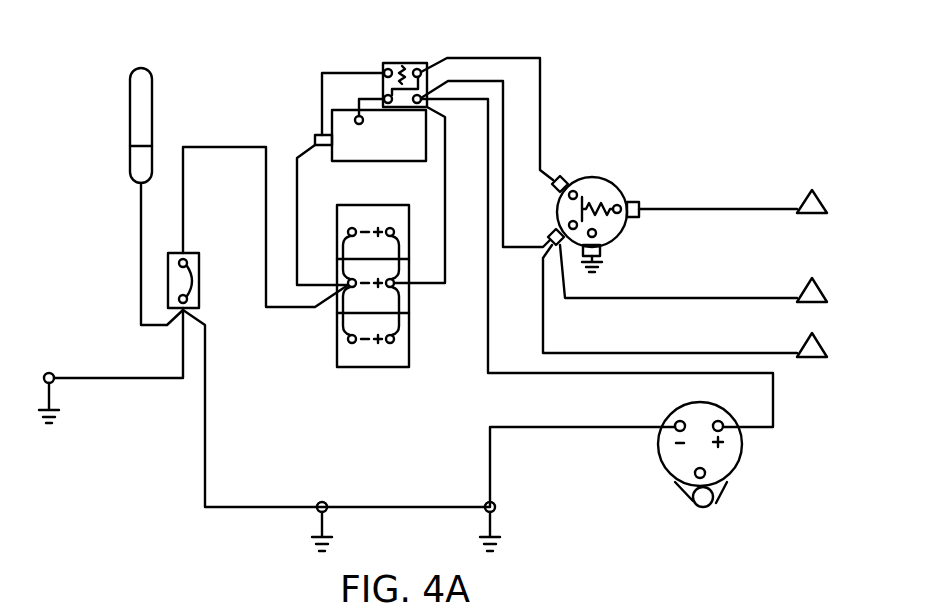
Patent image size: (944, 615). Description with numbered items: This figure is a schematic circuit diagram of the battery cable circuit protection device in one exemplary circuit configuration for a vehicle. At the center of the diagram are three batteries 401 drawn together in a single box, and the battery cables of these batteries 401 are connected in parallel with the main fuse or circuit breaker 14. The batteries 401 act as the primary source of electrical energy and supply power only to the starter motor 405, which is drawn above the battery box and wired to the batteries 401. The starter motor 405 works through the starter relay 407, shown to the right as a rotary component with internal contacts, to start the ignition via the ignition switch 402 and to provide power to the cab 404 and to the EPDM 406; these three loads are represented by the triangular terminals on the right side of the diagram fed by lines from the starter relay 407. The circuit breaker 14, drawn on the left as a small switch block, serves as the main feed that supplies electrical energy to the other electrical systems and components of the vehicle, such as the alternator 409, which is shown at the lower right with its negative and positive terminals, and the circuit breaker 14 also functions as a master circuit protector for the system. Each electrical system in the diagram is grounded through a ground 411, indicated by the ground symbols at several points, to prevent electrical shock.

The ground 411 is at (128, 112).
The main fuse or circuit breaker 14 is at (197, 282).
The starter motor 405 is at (407, 62).
The batteries 401 is at (412, 243).
The starter relay 407 is at (602, 178).
The ignition switch 402 is at (822, 199).
The cab 404 is at (822, 286).
The EPDM 406 is at (822, 341).
The alternator 409 is at (712, 503).